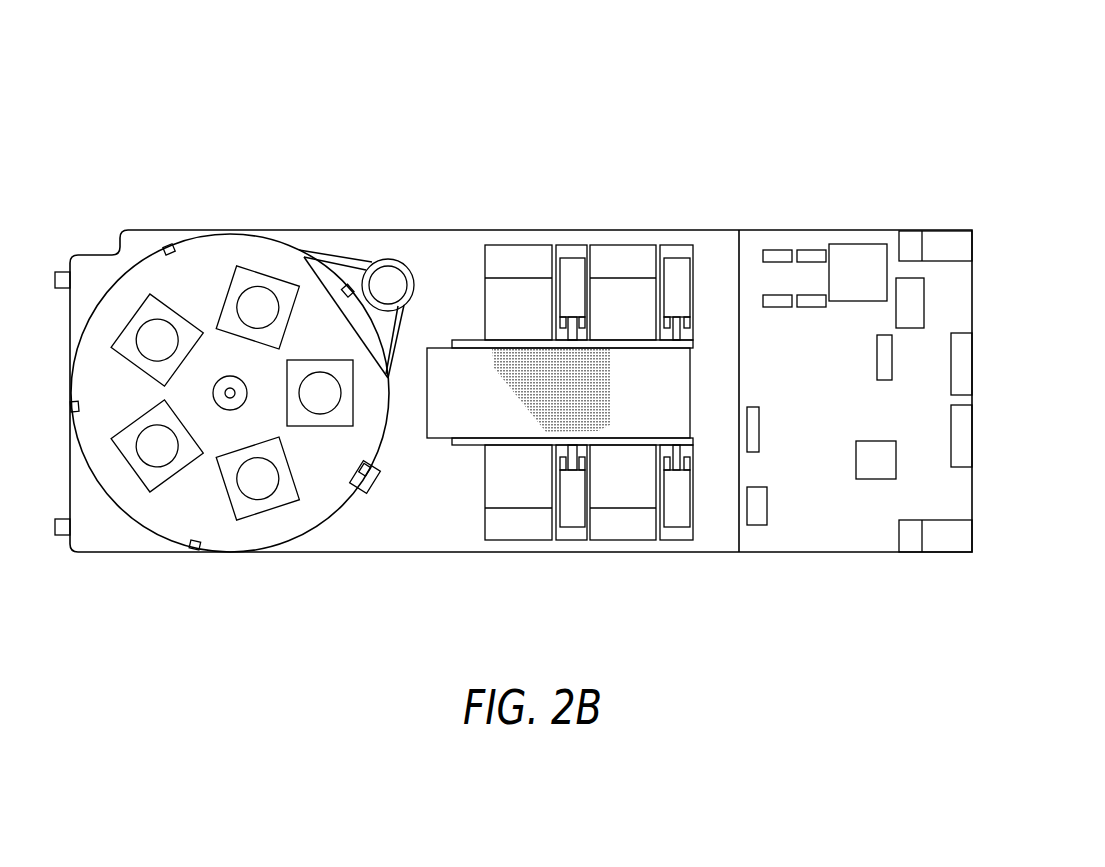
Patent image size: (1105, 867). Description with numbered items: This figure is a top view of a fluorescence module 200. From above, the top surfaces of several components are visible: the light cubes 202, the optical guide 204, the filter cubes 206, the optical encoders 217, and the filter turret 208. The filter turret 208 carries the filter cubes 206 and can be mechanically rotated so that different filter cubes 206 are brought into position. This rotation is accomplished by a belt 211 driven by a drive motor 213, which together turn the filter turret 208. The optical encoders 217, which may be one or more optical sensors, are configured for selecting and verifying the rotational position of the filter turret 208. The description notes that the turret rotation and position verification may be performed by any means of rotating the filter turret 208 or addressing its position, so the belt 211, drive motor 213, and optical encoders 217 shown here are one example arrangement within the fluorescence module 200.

The fluorescence module 200 is at (932, 108).
The light cubes 202 is at (620, 523).
The optical guide 204 is at (673, 385).
The filter cubes 206 is at (261, 500).
The filter turret 208 is at (165, 249).
The belt 211 is at (346, 259).
The drive motor 213 is at (388, 286).
The optical encoders 217 is at (369, 490).